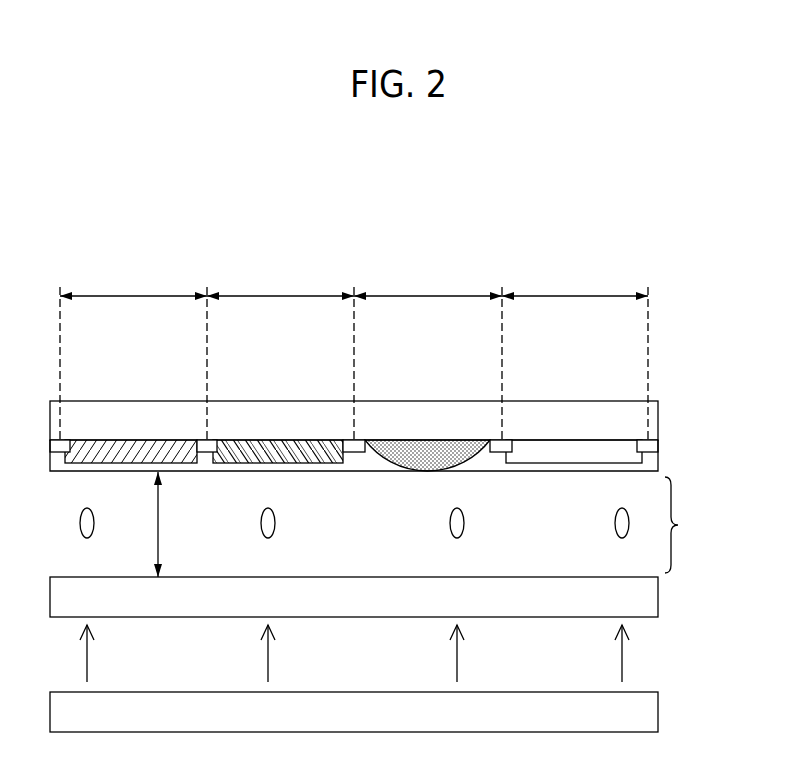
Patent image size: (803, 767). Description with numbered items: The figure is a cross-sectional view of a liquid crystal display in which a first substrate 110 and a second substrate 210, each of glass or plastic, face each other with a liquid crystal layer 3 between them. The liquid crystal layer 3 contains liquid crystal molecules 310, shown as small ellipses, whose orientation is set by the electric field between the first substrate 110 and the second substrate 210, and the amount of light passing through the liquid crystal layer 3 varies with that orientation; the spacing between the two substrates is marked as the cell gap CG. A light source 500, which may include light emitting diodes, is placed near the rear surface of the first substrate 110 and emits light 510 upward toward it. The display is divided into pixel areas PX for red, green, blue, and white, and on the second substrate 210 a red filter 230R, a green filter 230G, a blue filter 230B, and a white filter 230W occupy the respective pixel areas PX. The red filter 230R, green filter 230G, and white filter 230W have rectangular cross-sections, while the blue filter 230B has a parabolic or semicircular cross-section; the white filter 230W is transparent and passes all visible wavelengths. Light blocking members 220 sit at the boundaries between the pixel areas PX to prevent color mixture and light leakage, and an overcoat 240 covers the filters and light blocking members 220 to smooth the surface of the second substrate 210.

The second substrate 210 is at (653, 418).
The light blocking members 220 is at (652, 445).
The red filter 230R is at (122, 448).
The green filter 230G is at (280, 452).
The blue filter 230B is at (455, 458).
The white filter 230W is at (568, 455).
The overcoat 240 is at (652, 462).
The liquid crystal layer 3 is at (682, 525).
The liquid crystal molecules 310 is at (465, 522).
The cell gap CG is at (173, 524).
The first substrate 110 is at (647, 597).
The light 510 is at (622, 657).
The light source 500 is at (647, 712).
The pixel areas PX is at (354, 349).